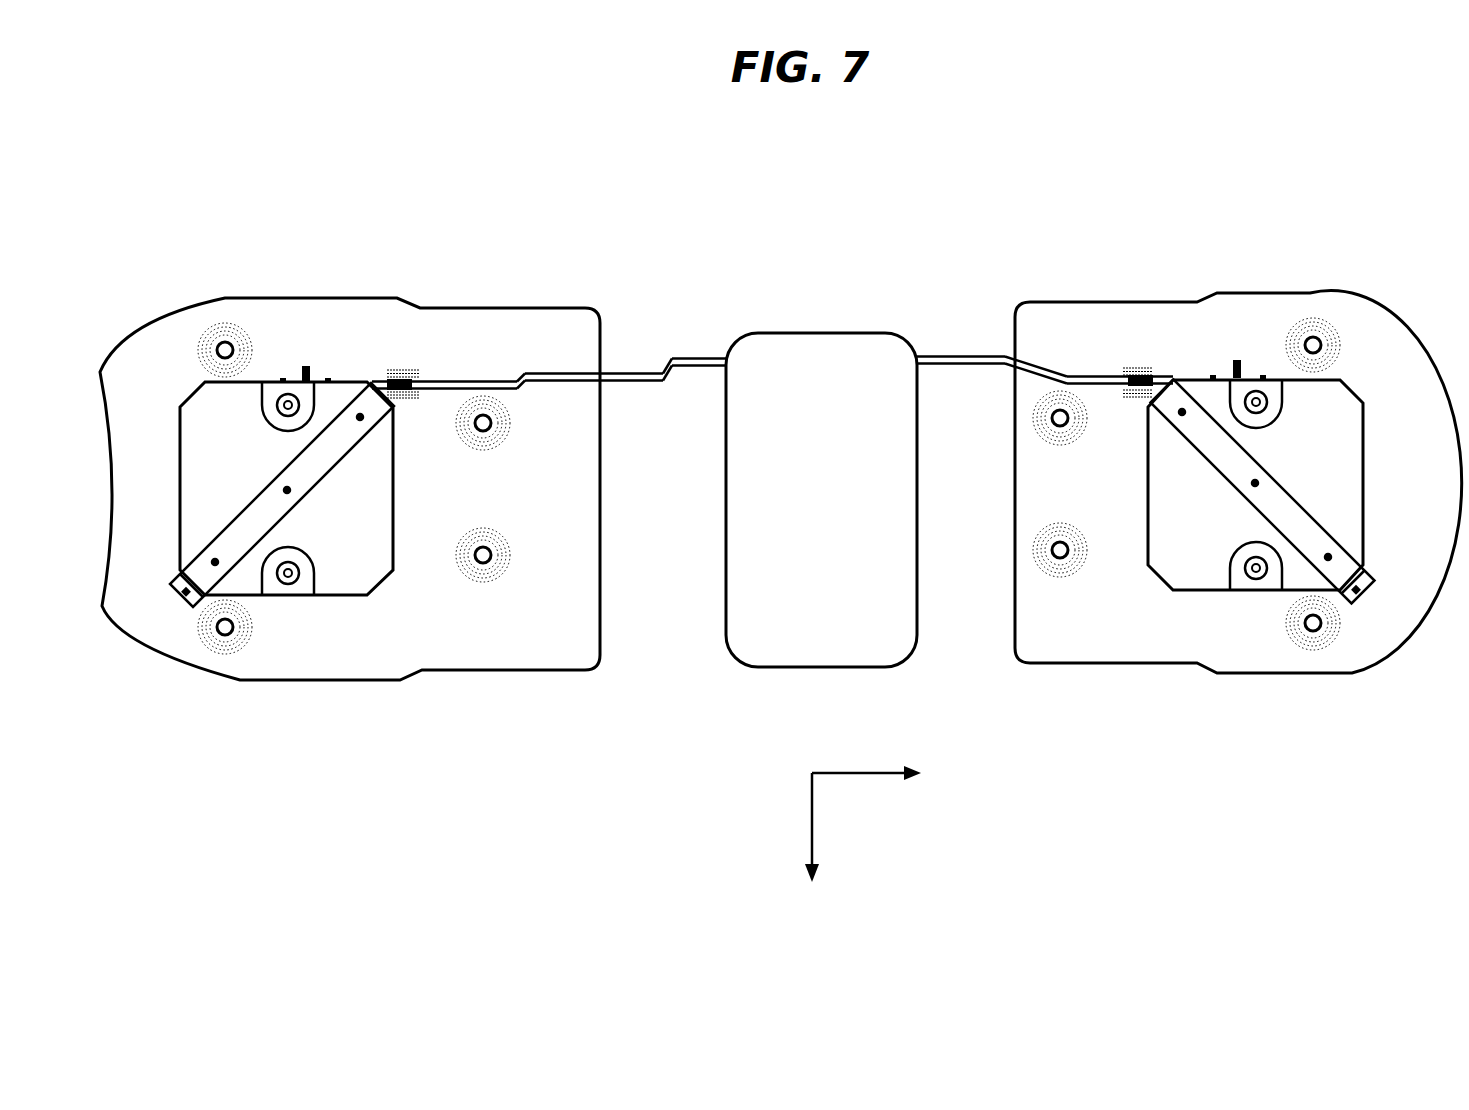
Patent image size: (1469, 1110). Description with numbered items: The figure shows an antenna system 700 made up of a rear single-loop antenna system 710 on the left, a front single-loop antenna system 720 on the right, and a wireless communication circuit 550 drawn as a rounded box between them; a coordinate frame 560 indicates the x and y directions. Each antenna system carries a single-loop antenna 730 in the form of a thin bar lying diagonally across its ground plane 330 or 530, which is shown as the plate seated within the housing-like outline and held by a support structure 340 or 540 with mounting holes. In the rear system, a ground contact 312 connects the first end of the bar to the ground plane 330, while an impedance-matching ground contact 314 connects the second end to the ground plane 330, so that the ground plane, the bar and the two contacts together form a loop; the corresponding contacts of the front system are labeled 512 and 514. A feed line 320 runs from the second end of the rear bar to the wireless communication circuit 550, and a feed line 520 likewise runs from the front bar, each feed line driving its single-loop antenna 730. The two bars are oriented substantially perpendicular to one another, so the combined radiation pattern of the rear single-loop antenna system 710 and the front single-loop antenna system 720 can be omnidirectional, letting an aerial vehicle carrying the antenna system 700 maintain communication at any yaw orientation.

The ground contact 312 is at (190, 378).
The impedance-matching ground contact 314 is at (305, 366).
The feed line 320 is at (480, 387).
The ground plane 330 is at (498, 635).
The support structure 340 is at (295, 590).
The second housing 512 is at (1360, 598).
The second connector clip 514 is at (1243, 366).
The feed line 520 is at (1068, 378).
The ground plane 530 is at (1058, 633).
The support structure 540 is at (1252, 583).
The wireless communication circuit 550 is at (821, 500).
The coordinate system 560 is at (853, 811).
The antenna system 700 is at (790, 231).
The rear single-loop antenna system 710 is at (100, 238).
The front single-loop antenna system 720 is at (1020, 248).
The single-loop antenna 730 is at (372, 400).